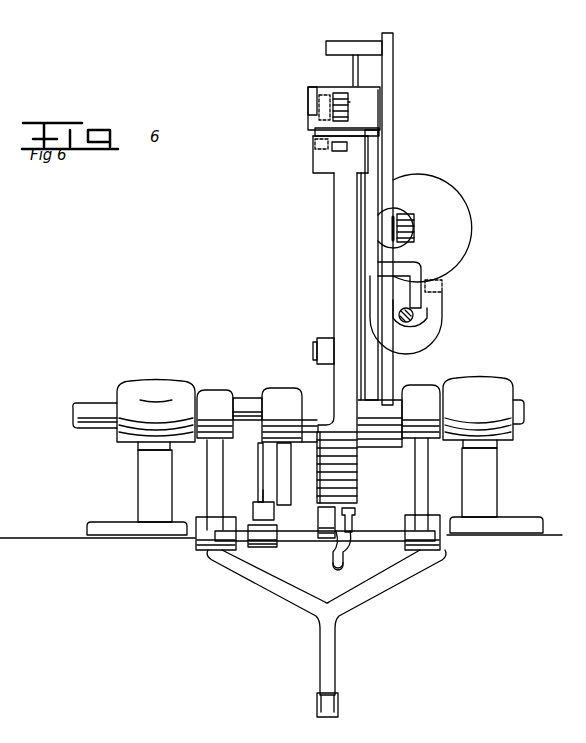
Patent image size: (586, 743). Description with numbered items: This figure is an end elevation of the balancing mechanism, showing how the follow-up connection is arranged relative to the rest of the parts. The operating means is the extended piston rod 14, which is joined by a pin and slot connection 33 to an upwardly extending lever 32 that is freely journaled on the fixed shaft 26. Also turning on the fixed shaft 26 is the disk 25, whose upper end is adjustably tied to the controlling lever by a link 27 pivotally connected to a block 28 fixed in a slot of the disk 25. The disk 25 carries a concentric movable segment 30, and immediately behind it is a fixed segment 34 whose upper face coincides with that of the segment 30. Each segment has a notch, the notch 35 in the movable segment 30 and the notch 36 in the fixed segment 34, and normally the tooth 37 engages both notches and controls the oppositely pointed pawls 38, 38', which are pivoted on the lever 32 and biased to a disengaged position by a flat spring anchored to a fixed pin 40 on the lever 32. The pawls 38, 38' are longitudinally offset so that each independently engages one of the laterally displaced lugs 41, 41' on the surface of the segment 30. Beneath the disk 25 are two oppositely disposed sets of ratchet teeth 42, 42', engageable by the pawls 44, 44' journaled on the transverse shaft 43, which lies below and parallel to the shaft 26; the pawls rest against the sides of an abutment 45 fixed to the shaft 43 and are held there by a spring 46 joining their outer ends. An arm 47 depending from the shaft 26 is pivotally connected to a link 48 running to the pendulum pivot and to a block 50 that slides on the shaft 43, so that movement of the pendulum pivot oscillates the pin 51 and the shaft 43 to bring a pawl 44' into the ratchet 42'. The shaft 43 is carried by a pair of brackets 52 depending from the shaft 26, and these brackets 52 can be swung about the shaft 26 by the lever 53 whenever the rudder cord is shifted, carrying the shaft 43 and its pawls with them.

The piston rod 14 is at (413, 222).
The disk 25 is at (340, 386).
The fixed shaft 26 is at (246, 400).
The link 27 is at (316, 350).
The block 28 is at (330, 339).
The movable segment 30 is at (318, 174).
The lever 32 is at (393, 112).
The pin and slot connection 33 is at (396, 228).
The fixed segment 34 is at (371, 166).
The notch 35 is at (315, 132).
The notch 36 is at (381, 136).
The tooth 37 is at (351, 109).
The pawl 38 is at (321, 108).
The pawl 38' is at (393, 88).
The fixed pin 40 is at (373, 47).
The lug 41 is at (298, 151).
The lug 41' is at (317, 182).
The ratchet teeth 42 is at (352, 467).
The ratchet teeth 42' is at (306, 467).
The transverse shaft 43 is at (302, 541).
The pawl 44 is at (363, 520).
The pawl 44' is at (316, 522).
The abutment 45 is at (353, 532).
The spring 46 is at (344, 563).
The arm 47 is at (263, 463).
The link 48 is at (292, 506).
The block 50 is at (254, 510).
The pin 51 is at (263, 494).
The brackets 52 is at (207, 487).
The lever 53 is at (325, 647).